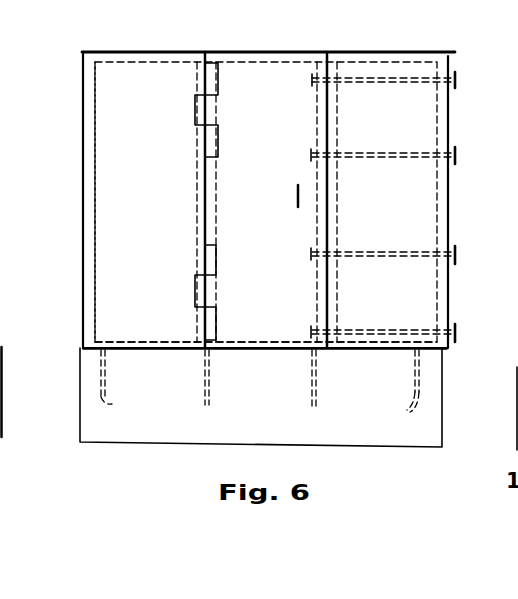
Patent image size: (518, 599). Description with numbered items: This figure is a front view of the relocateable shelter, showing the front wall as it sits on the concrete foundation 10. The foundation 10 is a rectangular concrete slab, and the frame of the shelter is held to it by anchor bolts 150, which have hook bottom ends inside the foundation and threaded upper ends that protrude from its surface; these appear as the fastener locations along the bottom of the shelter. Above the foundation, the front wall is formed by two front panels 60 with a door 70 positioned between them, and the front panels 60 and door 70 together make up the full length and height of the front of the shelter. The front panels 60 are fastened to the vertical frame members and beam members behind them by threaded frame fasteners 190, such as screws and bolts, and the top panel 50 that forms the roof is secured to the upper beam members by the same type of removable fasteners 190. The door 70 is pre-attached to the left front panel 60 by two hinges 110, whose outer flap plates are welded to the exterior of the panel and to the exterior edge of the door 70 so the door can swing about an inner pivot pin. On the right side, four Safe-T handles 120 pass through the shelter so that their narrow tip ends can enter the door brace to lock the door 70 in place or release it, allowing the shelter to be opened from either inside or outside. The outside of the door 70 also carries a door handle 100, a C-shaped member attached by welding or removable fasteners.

The concrete foundation 10 is at (269, 419).
The top panel 50 is at (268, 182).
The front panels 60 is at (227, 202).
The door 70 is at (265, 406).
The door handle 100 is at (298, 195).
The hinges 110 is at (161, 182).
The Safe-T handles 120 is at (414, 200).
The anchor bolts 150 is at (227, 418).
The frame fasteners 190 is at (92, 110).